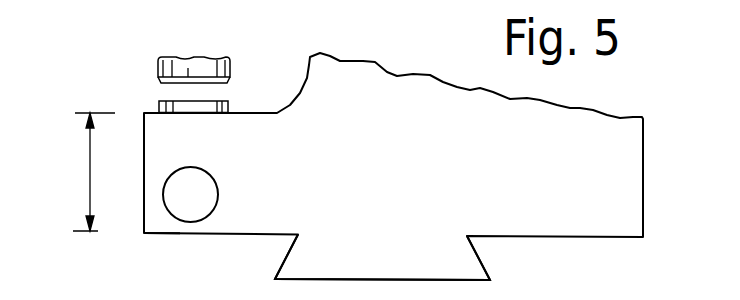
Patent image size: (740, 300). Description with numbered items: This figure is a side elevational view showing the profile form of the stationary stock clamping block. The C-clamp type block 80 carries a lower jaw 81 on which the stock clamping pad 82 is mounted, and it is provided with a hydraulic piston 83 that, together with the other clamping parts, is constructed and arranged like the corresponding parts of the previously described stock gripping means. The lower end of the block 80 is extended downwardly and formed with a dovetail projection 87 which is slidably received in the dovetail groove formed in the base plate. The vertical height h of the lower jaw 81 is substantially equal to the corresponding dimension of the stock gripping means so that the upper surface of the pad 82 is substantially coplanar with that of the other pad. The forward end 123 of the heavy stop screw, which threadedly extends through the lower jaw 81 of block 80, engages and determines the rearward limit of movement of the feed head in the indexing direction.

The C-clamp type block 80 is at (632, 181).
The lower jaw 81 is at (160, 226).
The stock clamping pad 82 is at (227, 107).
The hydraulic piston 83 is at (222, 62).
The dovetail projection 87 is at (468, 262).
The forward end of stop screw 123 is at (217, 182).
The vertical height of lower jaw h is at (90, 166).